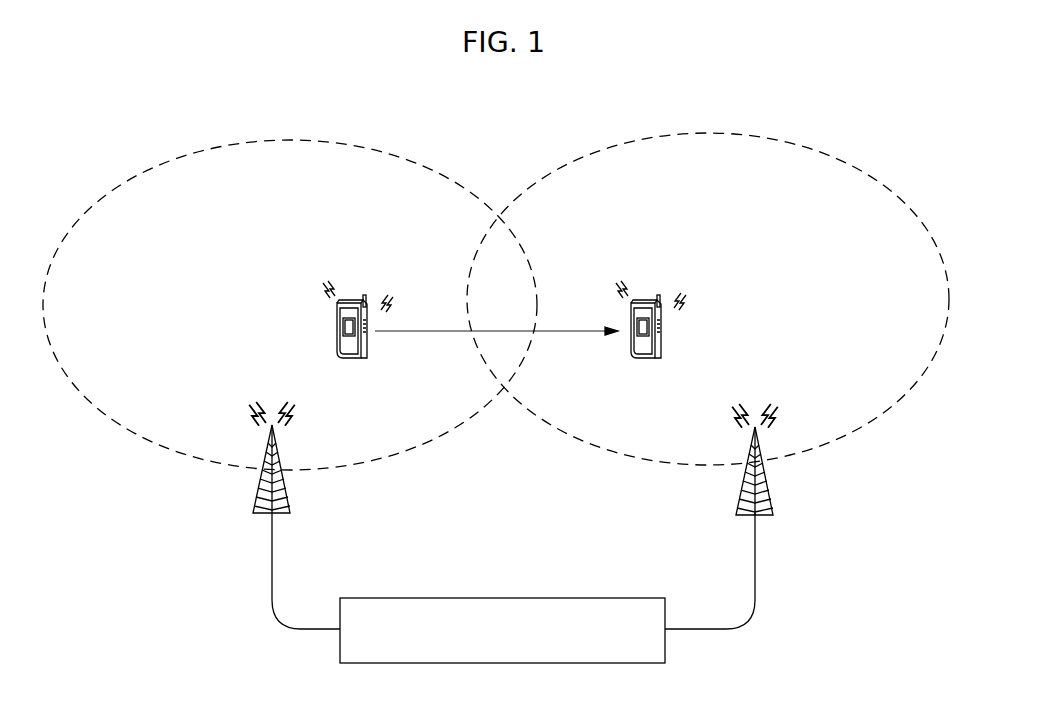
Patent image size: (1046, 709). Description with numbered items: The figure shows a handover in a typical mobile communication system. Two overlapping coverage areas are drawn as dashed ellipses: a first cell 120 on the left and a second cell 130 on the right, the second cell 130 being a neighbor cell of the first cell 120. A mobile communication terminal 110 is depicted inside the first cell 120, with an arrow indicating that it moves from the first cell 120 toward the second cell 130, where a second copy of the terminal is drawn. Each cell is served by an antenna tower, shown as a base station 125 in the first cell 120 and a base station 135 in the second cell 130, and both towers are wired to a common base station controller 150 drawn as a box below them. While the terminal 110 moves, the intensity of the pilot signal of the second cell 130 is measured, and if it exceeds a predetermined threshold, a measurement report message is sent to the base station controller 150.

The mobile communication terminal 110 is at (348, 297).
The first cell 120 is at (340, 143).
The first base station 125 is at (292, 500).
The second cell 130 is at (808, 147).
The second base station 135 is at (775, 500).
The base station controller 150 is at (521, 597).